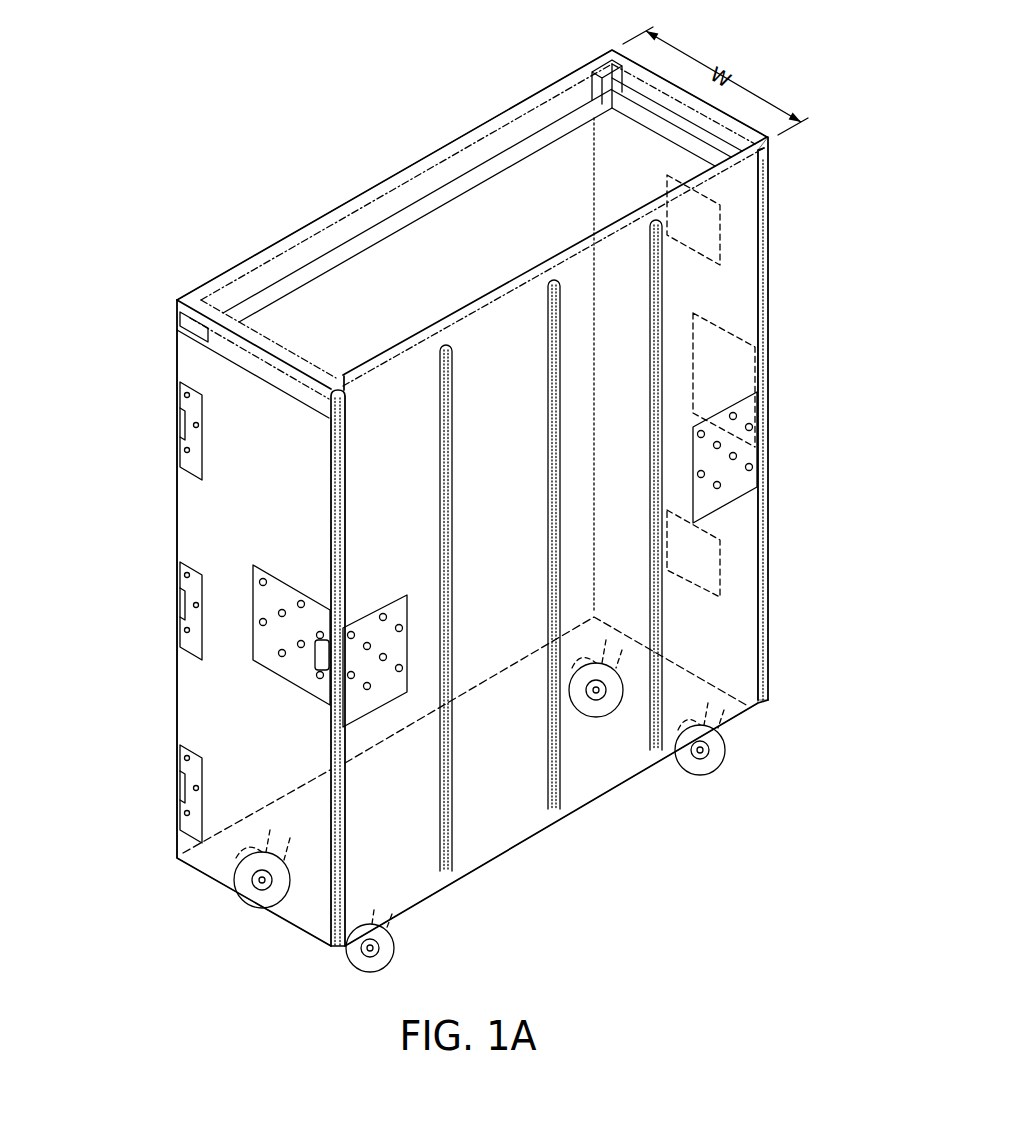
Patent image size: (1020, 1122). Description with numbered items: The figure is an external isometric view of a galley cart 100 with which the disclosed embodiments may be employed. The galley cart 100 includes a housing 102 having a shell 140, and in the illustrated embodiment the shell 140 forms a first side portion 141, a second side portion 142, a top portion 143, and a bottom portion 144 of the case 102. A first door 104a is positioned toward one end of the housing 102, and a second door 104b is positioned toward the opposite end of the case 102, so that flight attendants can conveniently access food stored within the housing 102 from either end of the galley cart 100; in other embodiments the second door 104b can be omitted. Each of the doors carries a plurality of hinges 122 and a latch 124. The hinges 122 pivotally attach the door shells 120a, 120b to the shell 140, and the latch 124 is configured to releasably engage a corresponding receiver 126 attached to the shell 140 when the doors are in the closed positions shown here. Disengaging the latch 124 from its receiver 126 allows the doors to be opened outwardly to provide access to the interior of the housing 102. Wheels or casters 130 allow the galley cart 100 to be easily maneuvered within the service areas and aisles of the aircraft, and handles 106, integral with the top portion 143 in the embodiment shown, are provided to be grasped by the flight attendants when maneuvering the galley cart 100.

The galley cart 100 is at (296, 98).
The housing 102 is at (500, 112).
The first door 104a is at (240, 521).
The second door 104b is at (735, 612).
The handle 106 is at (582, 80).
The door shell 120a is at (238, 492).
The door shell 120b is at (712, 280).
The hinge 122 is at (177, 408).
The latch 124 is at (285, 660).
The receiver 126 is at (388, 705).
The caster 130 is at (366, 966).
The shell 140 is at (573, 773).
The first side portion 141 is at (397, 402).
The second side portion 142 is at (678, 322).
The top portion 143 is at (458, 217).
The bottom portion 144 is at (470, 820).